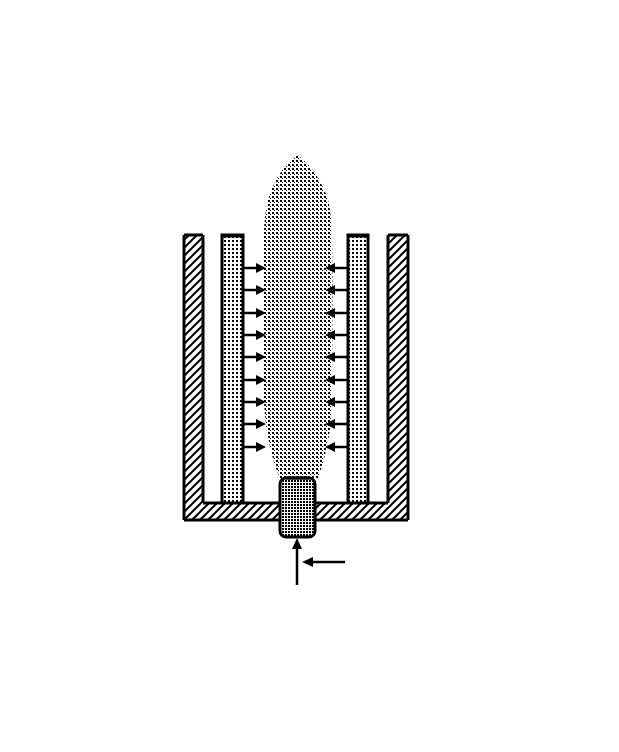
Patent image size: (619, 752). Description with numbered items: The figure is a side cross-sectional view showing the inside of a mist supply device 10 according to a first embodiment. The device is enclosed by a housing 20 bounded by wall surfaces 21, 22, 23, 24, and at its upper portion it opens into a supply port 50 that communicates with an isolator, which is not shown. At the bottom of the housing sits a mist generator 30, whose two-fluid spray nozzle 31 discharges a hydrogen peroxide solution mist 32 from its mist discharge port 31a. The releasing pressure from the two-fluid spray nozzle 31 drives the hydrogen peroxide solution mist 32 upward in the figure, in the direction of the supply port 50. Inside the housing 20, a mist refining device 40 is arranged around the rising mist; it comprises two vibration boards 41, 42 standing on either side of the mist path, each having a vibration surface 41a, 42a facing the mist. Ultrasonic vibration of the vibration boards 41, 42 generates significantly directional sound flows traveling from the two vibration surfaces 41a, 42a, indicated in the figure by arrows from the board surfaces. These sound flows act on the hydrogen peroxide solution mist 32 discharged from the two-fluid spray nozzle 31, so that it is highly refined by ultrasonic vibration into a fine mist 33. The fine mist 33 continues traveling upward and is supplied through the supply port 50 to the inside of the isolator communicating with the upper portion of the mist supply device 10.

The mist supply device 10 is at (226, 100).
The housing 20 is at (408, 370).
The wall surface 21 is at (203, 522).
The wall surface 22 is at (408, 403).
The wall surface 23 is at (183, 404).
The wall surface 24 is at (377, 233).
The mist generator 30 is at (276, 570).
The two-fluid spray nozzle 31 is at (280, 534).
The mist discharge port 31a is at (322, 478).
The hydrogen peroxide solution mist 32 is at (277, 462).
The fine mist 33 is at (295, 372).
The mist refining device 40 is at (353, 169).
The vibration board 41 is at (368, 326).
The vibration surface 41a is at (341, 258).
The vibration board 42 is at (235, 312).
The vibration surface 42a is at (252, 256).
The supply port 50 is at (259, 216).